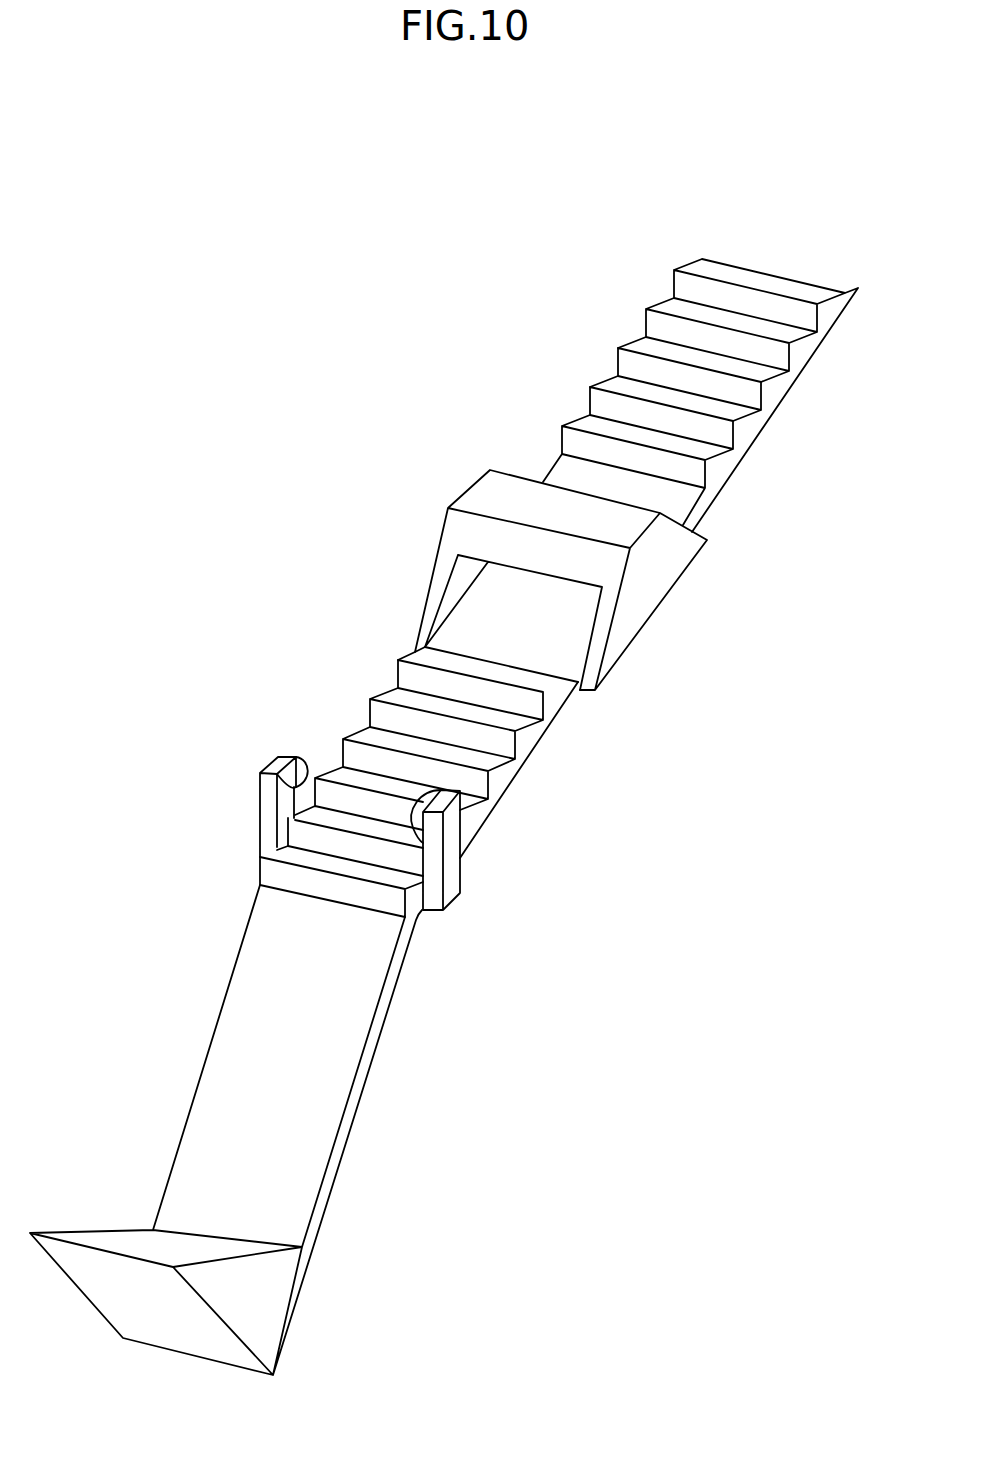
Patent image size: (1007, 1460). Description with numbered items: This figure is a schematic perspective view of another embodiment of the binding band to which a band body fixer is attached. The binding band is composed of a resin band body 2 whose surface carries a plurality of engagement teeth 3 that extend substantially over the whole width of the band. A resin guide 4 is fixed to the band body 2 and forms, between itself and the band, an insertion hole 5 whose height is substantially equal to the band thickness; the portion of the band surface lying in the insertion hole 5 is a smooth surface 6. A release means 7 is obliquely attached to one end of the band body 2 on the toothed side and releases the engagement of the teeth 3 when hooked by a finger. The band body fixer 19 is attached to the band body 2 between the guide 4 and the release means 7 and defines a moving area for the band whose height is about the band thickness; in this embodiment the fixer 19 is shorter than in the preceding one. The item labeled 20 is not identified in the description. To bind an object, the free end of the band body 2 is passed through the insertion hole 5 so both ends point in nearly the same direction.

The band body 2 is at (742, 457).
The engagement teeth 3 is at (643, 345).
The guide 4 is at (468, 487).
The insertion hole 5 is at (454, 613).
The smooth surface 6 is at (543, 653).
The release means 7 is at (383, 1022).
The band body fixer 19 is at (272, 762).
The roller 20 is at (290, 789).